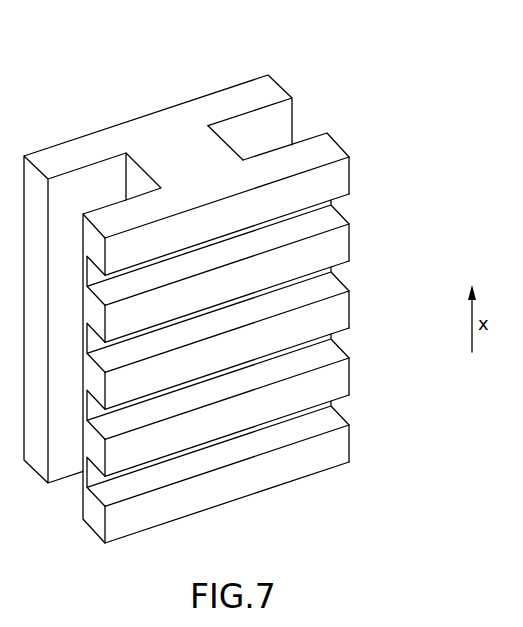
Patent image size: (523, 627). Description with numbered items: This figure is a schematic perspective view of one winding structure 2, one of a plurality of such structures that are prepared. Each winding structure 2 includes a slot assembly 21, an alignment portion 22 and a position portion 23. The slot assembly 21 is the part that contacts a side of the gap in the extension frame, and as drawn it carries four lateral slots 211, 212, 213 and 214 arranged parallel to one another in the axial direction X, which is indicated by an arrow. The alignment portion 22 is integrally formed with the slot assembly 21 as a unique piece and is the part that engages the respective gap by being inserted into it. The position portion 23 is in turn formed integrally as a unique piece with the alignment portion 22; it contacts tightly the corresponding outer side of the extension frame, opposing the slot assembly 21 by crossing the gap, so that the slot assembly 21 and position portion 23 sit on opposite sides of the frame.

The winding structure 2 is at (63, 118).
The slot assembly 21 is at (330, 151).
The lateral slot 211 is at (364, 208).
The lateral slot 212 is at (364, 272).
The lateral slot 213 is at (364, 340).
The lateral slot 214 is at (364, 406).
The alignment portion 22 is at (210, 150).
The position portion 23 is at (236, 96).